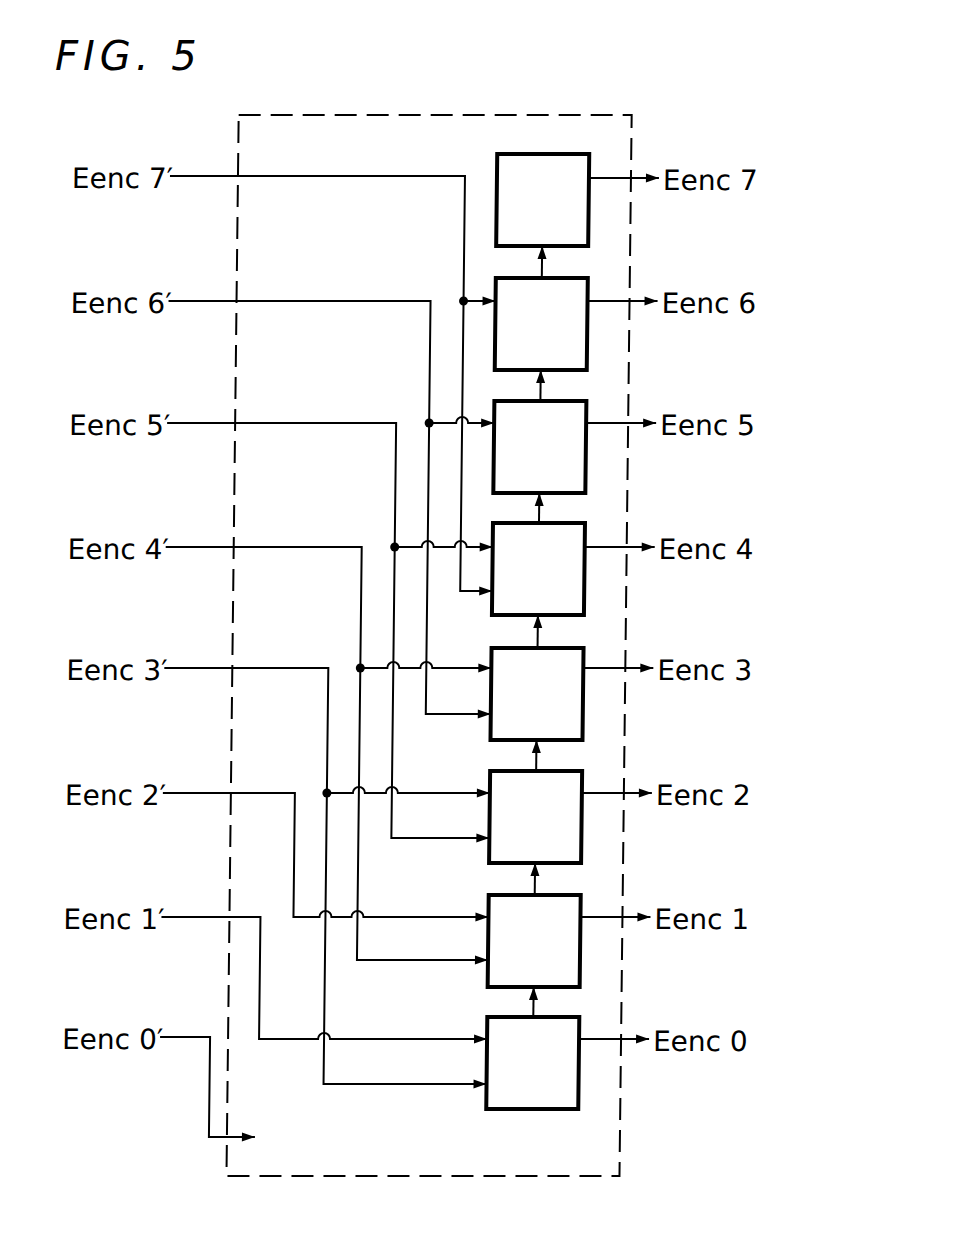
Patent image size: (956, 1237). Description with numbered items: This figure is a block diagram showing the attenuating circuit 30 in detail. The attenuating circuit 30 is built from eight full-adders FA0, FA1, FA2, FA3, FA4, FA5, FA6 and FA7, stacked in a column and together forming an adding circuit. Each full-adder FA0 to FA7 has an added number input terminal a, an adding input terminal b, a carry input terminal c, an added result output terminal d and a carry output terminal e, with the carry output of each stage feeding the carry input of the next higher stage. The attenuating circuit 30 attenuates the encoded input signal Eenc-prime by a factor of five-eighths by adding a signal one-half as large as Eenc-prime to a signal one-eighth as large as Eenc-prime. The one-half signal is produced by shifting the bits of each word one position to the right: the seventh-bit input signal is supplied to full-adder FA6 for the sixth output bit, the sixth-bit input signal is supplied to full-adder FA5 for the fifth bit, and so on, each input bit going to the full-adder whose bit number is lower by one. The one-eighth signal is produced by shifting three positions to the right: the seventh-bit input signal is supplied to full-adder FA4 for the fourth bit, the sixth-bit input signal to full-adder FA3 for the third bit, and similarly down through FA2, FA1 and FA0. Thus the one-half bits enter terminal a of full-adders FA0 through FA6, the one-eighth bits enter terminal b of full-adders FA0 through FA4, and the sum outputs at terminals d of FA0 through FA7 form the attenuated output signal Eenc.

The attenuating circuit 30 is at (561, 116).
The full-adder FA7 is at (499, 178).
The full-adder FA6 is at (592, 333).
The full-adder FA5 is at (592, 445).
The full-adder FA4 is at (499, 617).
The full-adder FA3 is at (499, 740).
The full-adder FA2 is at (499, 863).
The full-adder FA1 is at (500, 987).
The full-adder FA0 is at (500, 1108).